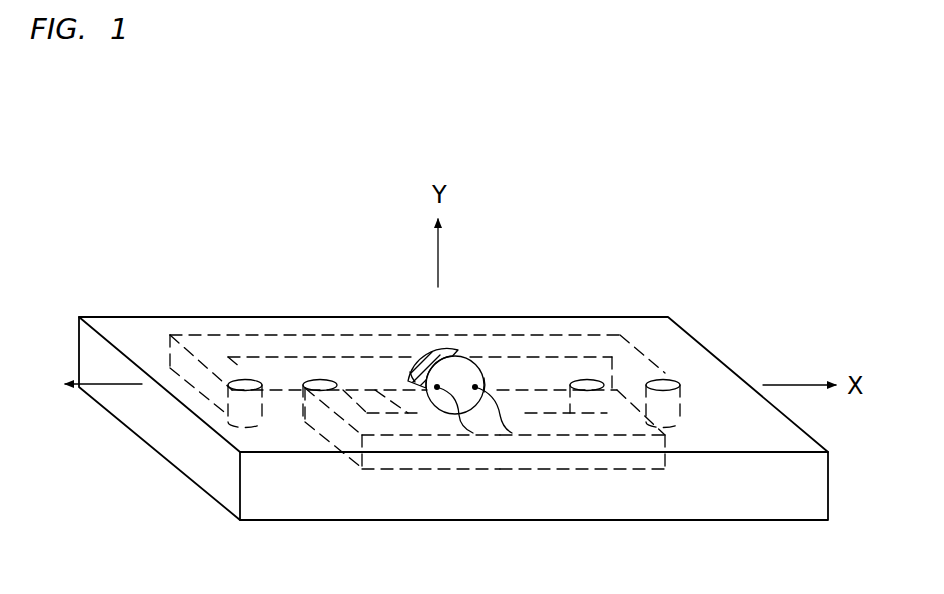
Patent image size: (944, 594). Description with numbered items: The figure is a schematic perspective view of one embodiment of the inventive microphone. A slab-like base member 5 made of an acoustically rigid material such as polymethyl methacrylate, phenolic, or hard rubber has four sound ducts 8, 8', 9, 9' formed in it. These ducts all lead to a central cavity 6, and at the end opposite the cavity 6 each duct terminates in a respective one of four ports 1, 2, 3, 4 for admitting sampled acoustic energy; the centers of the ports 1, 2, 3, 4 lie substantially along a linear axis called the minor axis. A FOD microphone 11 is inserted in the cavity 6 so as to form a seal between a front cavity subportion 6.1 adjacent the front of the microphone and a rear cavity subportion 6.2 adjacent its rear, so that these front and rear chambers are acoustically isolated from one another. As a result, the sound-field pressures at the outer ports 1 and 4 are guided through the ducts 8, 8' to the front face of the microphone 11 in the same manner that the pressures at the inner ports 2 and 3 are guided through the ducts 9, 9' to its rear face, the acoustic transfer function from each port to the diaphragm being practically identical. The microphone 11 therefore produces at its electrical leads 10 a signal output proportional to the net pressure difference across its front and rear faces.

The port 1 is at (250, 394).
The port 2 is at (328, 391).
The port 3 is at (590, 385).
The port 4 is at (669, 394).
The base member 5 is at (323, 504).
The central cavity 6 is at (420, 350).
The front cavity subportion 6.1 is at (395, 363).
The rear cavity subportion 6.2 is at (497, 391).
The sound duct 8 is at (395, 341).
The sound duct 8' is at (567, 340).
The sound duct 9 is at (402, 452).
The sound duct 9' is at (582, 453).
The electrical leads 10 is at (497, 442).
The FOD microphone 11 is at (410, 377).